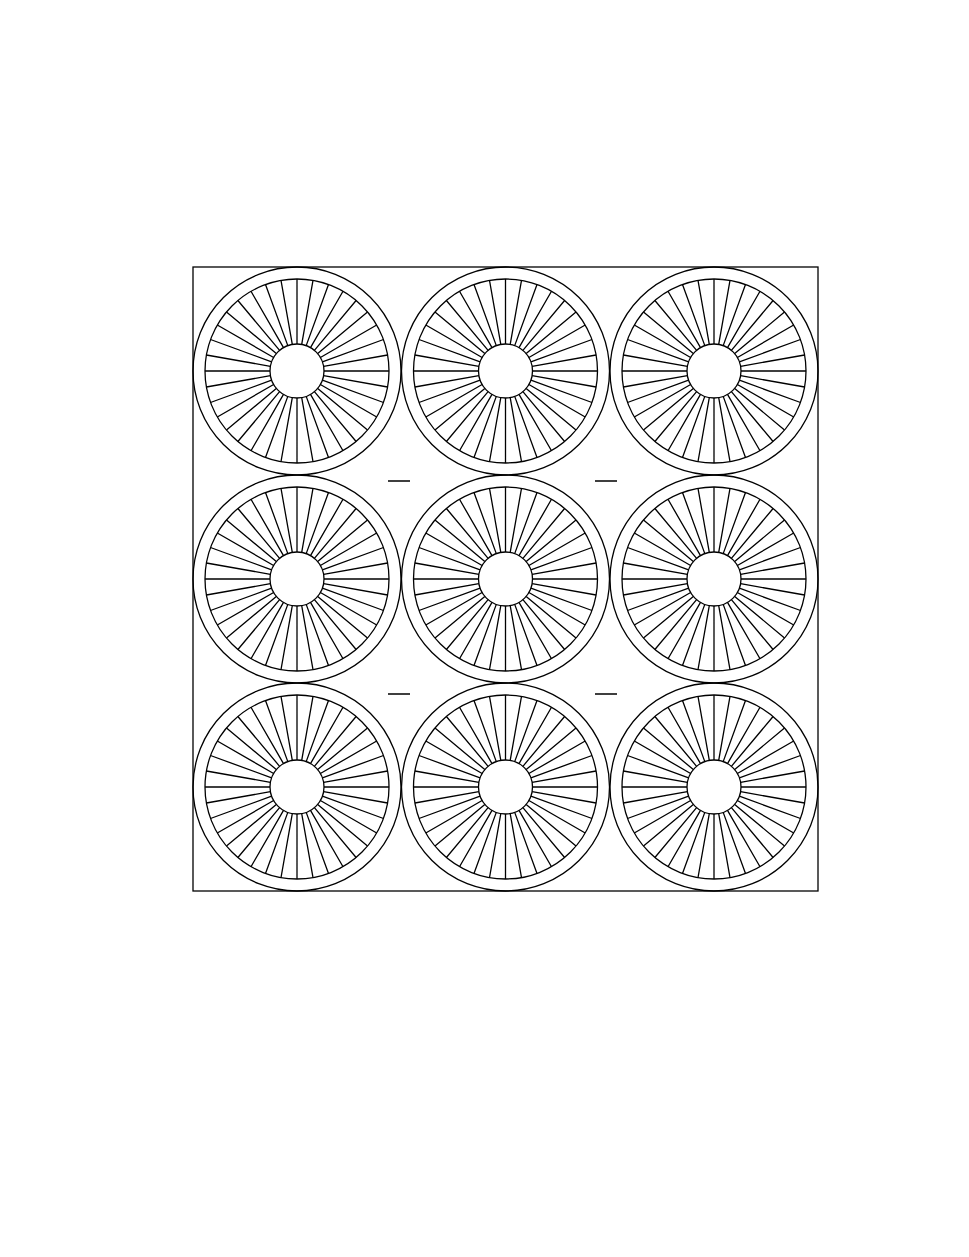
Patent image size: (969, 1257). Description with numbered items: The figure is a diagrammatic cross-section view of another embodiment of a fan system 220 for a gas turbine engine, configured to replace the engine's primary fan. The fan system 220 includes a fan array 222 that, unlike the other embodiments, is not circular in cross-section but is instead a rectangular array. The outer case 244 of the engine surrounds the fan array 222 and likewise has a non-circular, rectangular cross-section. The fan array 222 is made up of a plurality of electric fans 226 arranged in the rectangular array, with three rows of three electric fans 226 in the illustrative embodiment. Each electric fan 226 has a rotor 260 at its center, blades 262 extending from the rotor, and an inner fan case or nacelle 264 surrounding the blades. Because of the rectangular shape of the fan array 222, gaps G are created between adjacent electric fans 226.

The fan system 220 is at (235, 80).
The fan array 222 is at (175, 250).
The outer case 244 is at (782, 267).
The electric fan 226 is at (375, 290).
The rotor 260 is at (285, 815).
The blades 262 is at (305, 886).
The inner fan case or nacelle 264 is at (206, 837).